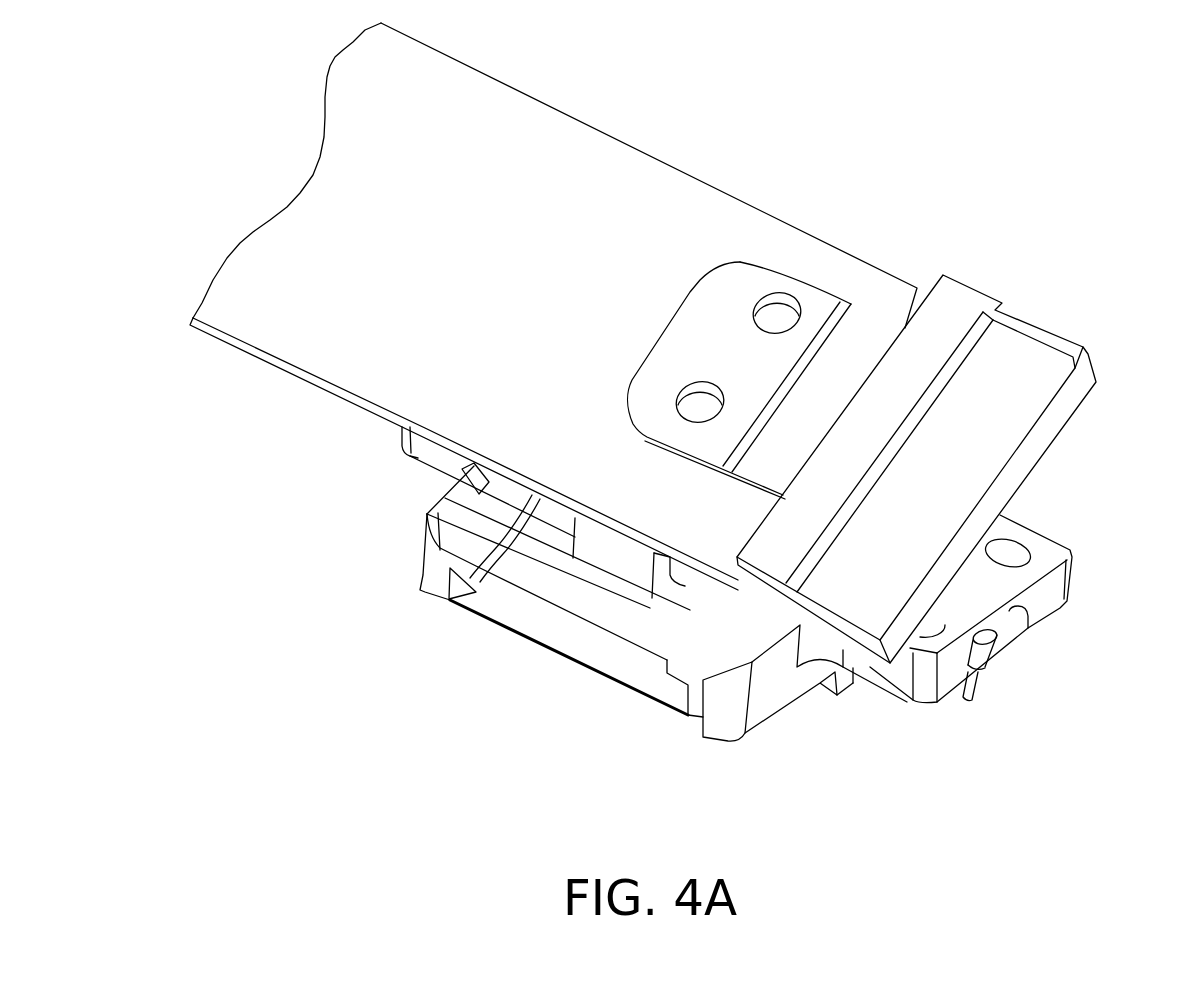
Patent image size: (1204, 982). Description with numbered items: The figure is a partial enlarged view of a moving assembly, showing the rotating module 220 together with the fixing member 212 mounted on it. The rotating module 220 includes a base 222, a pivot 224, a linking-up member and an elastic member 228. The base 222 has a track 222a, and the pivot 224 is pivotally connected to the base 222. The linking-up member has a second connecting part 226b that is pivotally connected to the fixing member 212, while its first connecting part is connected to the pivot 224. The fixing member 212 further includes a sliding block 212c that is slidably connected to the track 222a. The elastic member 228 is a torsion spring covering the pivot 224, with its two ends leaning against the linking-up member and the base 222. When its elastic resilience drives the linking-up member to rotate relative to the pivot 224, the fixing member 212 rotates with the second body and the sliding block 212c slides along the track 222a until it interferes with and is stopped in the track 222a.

The fixing member 212 is at (1063, 410).
The sliding block 212c is at (565, 590).
The rotating module 220 is at (400, 766).
The base 222 is at (1047, 552).
The track 222a is at (450, 570).
The pivot 224 is at (987, 650).
The second connecting part 226b is at (692, 580).
The elastic member 228 is at (985, 694).